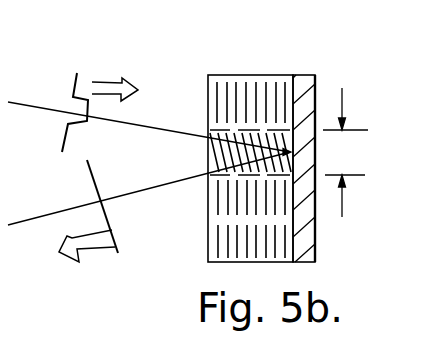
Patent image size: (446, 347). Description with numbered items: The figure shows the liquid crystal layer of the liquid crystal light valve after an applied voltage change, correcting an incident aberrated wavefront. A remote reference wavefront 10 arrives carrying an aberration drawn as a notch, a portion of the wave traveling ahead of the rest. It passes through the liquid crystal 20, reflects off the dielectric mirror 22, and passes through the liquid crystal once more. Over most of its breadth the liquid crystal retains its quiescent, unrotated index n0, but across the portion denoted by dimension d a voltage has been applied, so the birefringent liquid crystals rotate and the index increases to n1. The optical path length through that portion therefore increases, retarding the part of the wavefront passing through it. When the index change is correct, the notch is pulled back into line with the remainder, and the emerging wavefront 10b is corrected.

The remote reference wavefront 10 is at (149, 102).
The corrected output wavefront 10b is at (149, 207).
The liquid crystal 20 is at (229, 146).
The dielectric mirror 22 is at (298, 75).
The quiescent index n0 is at (215, 108).
The increased index of refraction n1 is at (214, 152).
The dimension d is at (345, 152).